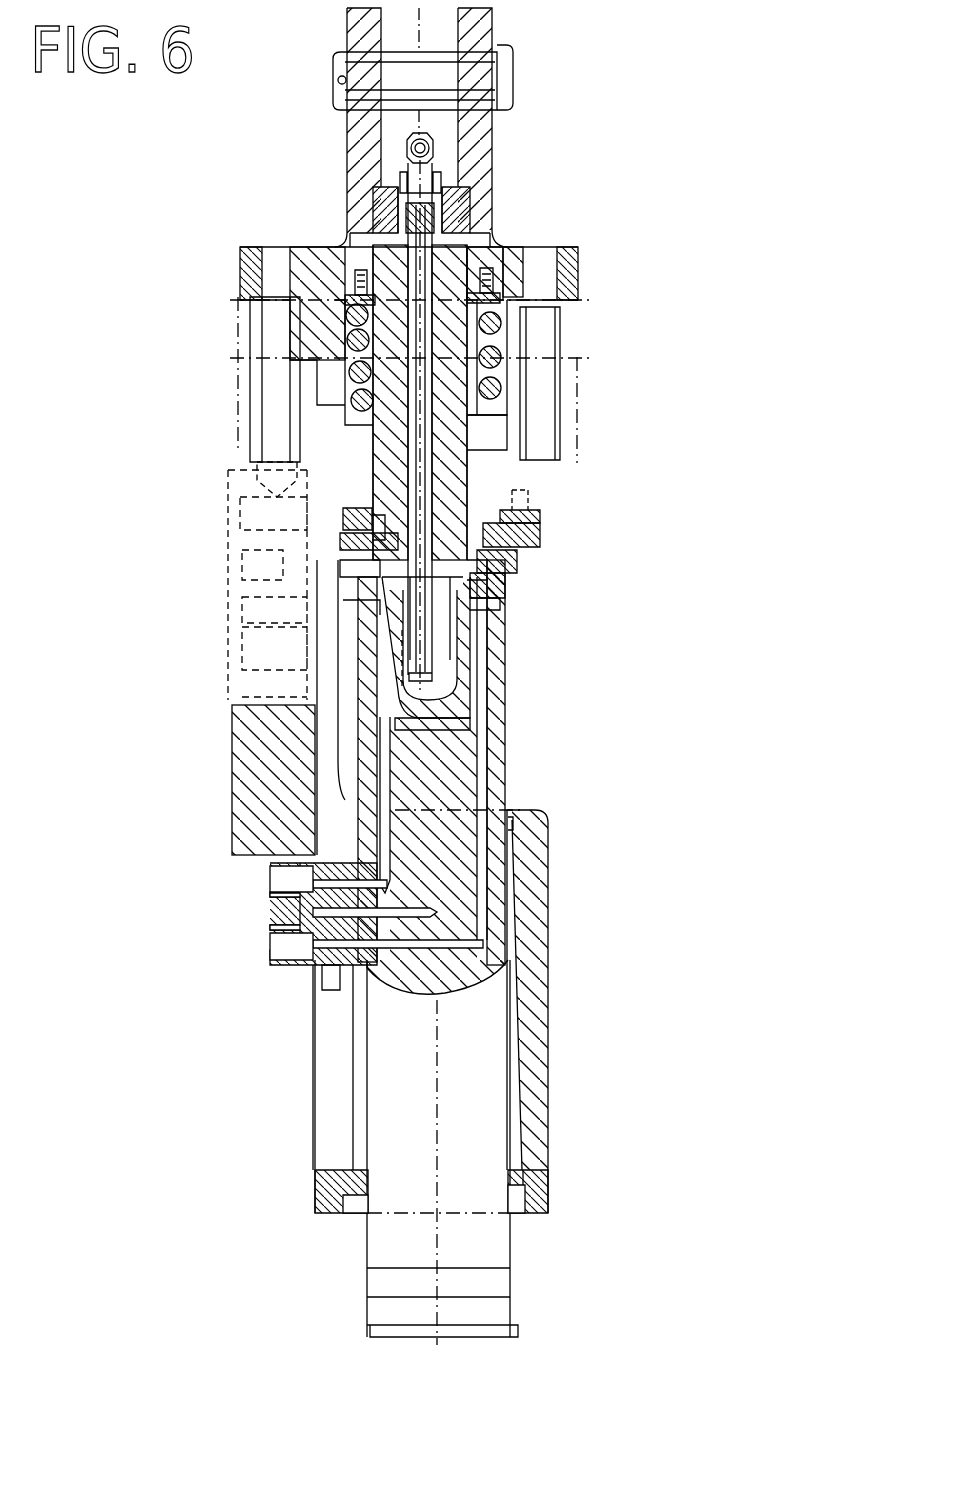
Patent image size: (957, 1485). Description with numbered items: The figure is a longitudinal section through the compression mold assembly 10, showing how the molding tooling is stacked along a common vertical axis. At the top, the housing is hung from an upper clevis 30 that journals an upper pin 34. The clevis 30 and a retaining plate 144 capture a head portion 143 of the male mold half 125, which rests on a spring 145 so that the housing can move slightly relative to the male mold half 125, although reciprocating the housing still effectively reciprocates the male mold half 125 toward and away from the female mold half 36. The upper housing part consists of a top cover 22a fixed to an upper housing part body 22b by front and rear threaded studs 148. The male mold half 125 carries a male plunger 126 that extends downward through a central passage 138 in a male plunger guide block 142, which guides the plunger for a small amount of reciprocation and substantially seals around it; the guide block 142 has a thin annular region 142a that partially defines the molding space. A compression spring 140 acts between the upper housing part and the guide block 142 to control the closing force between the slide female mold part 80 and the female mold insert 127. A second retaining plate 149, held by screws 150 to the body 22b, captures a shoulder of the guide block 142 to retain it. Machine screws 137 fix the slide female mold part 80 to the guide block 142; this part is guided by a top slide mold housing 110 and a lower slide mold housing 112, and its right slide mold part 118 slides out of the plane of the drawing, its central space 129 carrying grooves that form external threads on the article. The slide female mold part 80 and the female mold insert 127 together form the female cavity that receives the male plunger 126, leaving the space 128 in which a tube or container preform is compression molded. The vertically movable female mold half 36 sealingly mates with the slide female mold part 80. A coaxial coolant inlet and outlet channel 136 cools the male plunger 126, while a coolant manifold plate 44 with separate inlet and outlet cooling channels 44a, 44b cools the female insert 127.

The compression mold assembly 10 is at (522, 138).
The upper clevis 30 is at (358, 151).
The upper pin 34 is at (480, 63).
The female mold half 36 is at (508, 759).
The top cover 22a is at (580, 260).
The upper housing part body 22b is at (583, 310).
The coolant manifold plate 44 is at (268, 908).
The inlet cooling channel 44a is at (278, 942).
The outlet cooling channel 44b is at (278, 884).
The slide female mold part 80 is at (521, 563).
The top slide mold housing 110 is at (512, 548).
The lower slide mold housing 112 is at (506, 574).
The right slide mold part 118 is at (490, 602).
The male mold half 125 is at (468, 460).
The male plunger 126 is at (448, 643).
The female mold insert 127 is at (465, 660).
The space 128 is at (455, 670).
The central space 129 is at (393, 608).
The coolant inlet and outlet channel 136 is at (433, 500).
The machine screws 137 is at (392, 532).
The central passage 138 is at (456, 414).
The compression spring 140 is at (493, 325).
The male plunger guide block 142 is at (482, 478).
The thin annular region 142a is at (380, 503).
The head portion 143 is at (463, 201).
The retaining plate 144 is at (346, 243).
The spring 145 is at (498, 216).
The threaded studs 148 is at (262, 265).
The second retaining plate 149 is at (345, 520).
The screws 150 is at (532, 513).